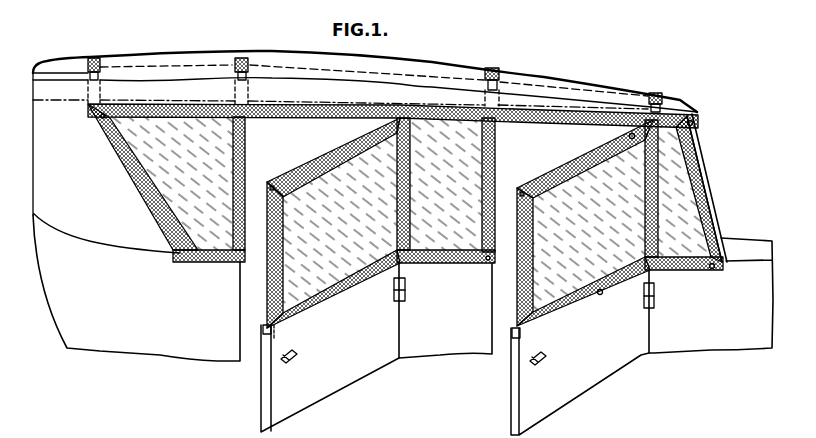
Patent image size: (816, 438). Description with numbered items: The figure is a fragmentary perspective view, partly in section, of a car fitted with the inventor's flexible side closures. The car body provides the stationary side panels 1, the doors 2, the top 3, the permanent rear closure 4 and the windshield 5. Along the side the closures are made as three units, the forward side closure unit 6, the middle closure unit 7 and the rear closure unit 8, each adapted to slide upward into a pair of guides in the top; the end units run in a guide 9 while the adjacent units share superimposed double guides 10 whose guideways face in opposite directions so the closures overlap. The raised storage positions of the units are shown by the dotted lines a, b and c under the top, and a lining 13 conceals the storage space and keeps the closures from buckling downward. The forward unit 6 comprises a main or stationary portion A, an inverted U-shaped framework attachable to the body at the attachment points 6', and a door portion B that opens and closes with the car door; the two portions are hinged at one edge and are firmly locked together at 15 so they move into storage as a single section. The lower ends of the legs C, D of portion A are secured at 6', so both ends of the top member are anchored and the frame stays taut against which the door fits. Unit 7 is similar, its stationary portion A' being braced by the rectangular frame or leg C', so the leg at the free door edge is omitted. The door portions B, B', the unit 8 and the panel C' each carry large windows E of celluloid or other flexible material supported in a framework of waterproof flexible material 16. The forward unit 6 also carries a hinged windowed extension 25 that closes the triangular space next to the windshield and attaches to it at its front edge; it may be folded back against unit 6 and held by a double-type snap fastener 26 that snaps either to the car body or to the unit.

The stationary side panel 1 is at (403, 288).
The door 2 is at (455, 377).
The top 3 is at (426, 62).
The permanent rear closure 4 is at (106, 163).
The windshield 5 is at (712, 183).
The side closure unit 6 is at (393, 124).
The attachment point 6' is at (448, 272).
The closure unit 7 is at (333, 157).
The closure unit 8 is at (171, 184).
The guide 9 is at (100, 64).
The double guide 10 is at (240, 62).
The lining 13 is at (419, 87).
The locking point 15 is at (503, 127).
The framework of waterproof flexible material 16 is at (145, 182).
The hinged windowed extension 25 is at (663, 233).
The snap fastener 26 is at (693, 124).
The main or stationary portion A is at (548, 130).
The stationary portion A' is at (285, 130).
The door portion B is at (585, 159).
The door portion B' is at (340, 158).
The leg C is at (661, 188).
The rectangular frame or leg C' is at (415, 184).
The leg D is at (492, 190).
The window E is at (420, 216).
The dotted line a is at (565, 88).
The dotted line b is at (374, 78).
The dotted line c is at (157, 61).